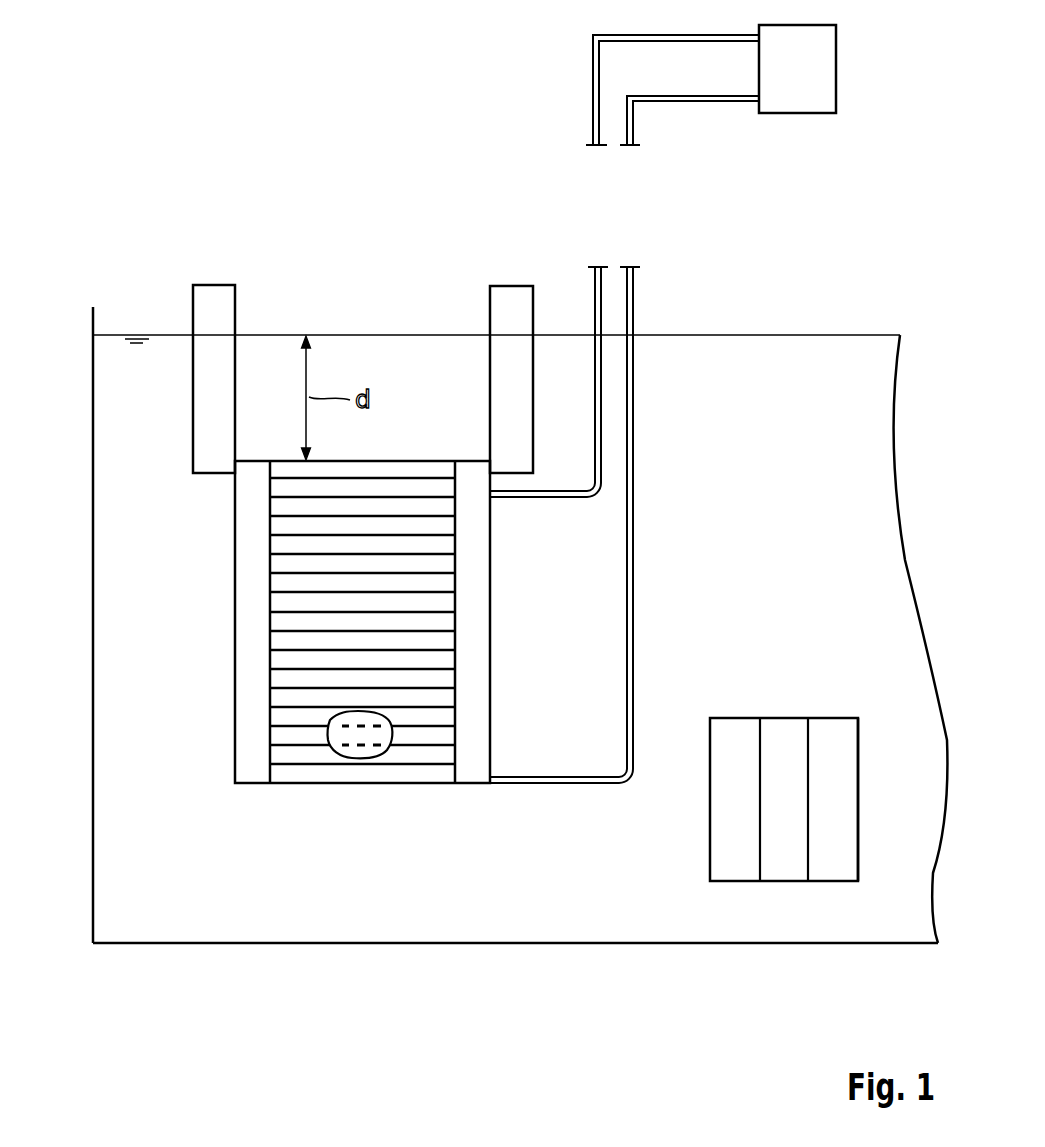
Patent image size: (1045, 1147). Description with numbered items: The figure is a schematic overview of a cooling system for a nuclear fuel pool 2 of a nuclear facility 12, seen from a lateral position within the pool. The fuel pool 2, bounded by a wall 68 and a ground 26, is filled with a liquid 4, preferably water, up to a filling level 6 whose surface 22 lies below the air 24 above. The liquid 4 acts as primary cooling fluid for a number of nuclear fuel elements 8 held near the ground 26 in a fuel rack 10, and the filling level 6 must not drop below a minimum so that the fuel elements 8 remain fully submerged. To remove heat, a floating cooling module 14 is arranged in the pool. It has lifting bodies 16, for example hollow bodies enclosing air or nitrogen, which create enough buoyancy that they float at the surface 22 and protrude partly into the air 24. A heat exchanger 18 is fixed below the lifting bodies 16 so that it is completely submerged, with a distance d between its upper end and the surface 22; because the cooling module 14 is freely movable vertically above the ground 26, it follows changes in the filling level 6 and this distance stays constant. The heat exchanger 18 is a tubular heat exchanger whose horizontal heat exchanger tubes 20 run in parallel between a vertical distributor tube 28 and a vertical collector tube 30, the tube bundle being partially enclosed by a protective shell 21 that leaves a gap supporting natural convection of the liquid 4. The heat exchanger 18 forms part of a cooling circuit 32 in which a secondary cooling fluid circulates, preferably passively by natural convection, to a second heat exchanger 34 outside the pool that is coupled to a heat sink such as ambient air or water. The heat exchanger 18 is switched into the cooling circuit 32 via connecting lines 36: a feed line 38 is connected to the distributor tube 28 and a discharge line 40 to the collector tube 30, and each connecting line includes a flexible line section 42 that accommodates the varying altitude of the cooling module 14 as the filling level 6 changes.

The nuclear fuel pool 2 is at (742, 548).
The liquid 4 is at (488, 625).
The filling level 6 is at (134, 328).
The nuclear fuel elements 8 is at (829, 728).
The fuel rack 10 is at (858, 757).
The nuclear facility 12 is at (352, 76).
The cooling module 14 is at (207, 592).
The lifting body 16 is at (214, 285).
The heat exchanger 18 is at (515, 592).
The heat exchanger tubes 20 is at (364, 611).
The protective shell 21 is at (357, 758).
The surface 22 is at (841, 335).
The air 24 is at (250, 144).
The ground 26 is at (447, 943).
The distributor tube 28 is at (492, 672).
The collector tube 30 is at (233, 672).
The cooling circuit 32 is at (557, 70).
The second heat exchanger 34 is at (836, 65).
The connecting lines 36 is at (629, 521).
The feed line 38 is at (602, 300).
The discharge line 40 is at (634, 383).
The flexible line section 42 is at (580, 475).
The wall 68 is at (92, 497).